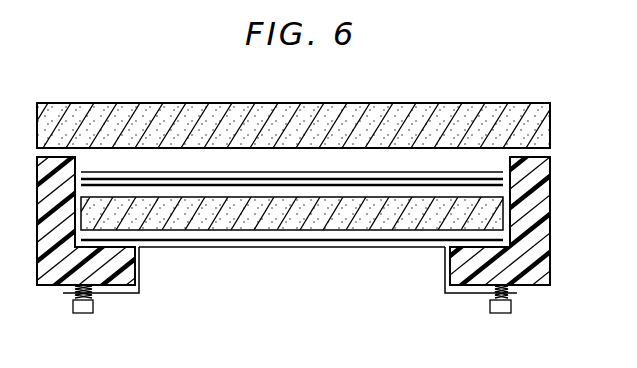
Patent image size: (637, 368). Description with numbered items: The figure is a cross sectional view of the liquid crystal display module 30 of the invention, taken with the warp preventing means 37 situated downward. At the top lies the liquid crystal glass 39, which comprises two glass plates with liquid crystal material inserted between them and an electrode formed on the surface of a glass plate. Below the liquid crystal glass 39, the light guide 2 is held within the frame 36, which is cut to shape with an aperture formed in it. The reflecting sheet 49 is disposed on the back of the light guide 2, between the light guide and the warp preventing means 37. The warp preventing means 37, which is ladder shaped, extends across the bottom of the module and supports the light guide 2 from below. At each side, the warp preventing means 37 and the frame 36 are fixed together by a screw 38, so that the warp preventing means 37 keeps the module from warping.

The liquid crystal display module 30 is at (441, 86).
The liquid crystal glass 39 is at (568, 117).
The frame 36 is at (572, 203).
The light guide 2 is at (214, 222).
The reflecting sheet 49 is at (260, 243).
The warp preventing means 37 is at (372, 250).
The screw 38 is at (81, 315).